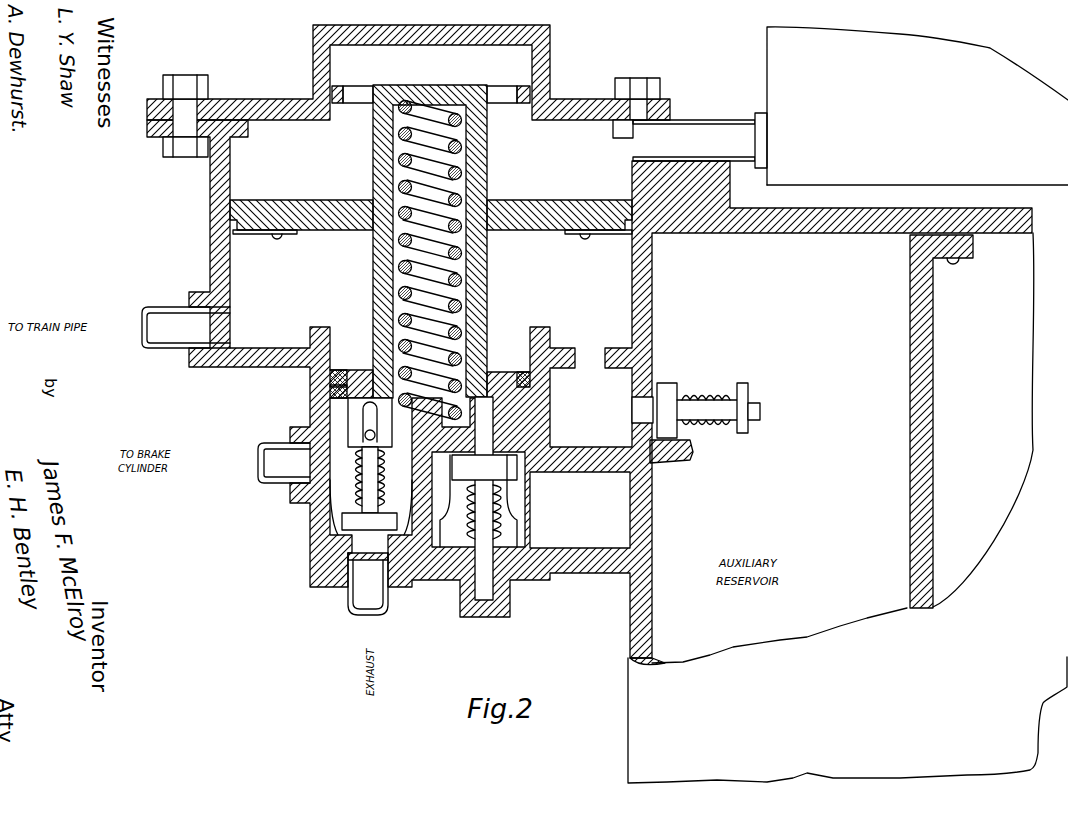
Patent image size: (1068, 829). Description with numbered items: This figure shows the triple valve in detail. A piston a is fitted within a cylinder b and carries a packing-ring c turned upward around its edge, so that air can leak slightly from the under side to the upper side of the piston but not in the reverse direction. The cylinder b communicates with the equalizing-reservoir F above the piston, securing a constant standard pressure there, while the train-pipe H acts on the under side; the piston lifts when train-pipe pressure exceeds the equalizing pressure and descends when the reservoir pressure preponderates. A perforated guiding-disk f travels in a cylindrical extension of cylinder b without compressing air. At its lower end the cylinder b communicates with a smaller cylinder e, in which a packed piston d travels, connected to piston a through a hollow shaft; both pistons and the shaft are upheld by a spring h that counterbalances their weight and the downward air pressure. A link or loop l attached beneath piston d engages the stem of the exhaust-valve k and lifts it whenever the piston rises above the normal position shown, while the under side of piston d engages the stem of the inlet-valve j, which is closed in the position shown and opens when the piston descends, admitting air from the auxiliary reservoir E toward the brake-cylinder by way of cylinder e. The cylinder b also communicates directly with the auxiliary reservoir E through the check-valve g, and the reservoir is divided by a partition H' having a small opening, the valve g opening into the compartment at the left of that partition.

The piston a is at (293, 200).
The cylinder b is at (210, 188).
The packing-ring c is at (236, 203).
The piston d is at (344, 371).
The smaller cylinder e is at (310, 394).
The perforated guiding-disk f is at (340, 86).
The check-valve g is at (708, 410).
The spring h is at (430, 252).
The inlet-valve j is at (478, 498).
The exhaust-valve k is at (369, 523).
The link or loop l is at (371, 466).
The auxiliary reservoir E is at (727, 472).
The equalizing-reservoir F is at (850, 106).
The train-pipe H is at (186, 317).
The partition H' is at (981, 433).